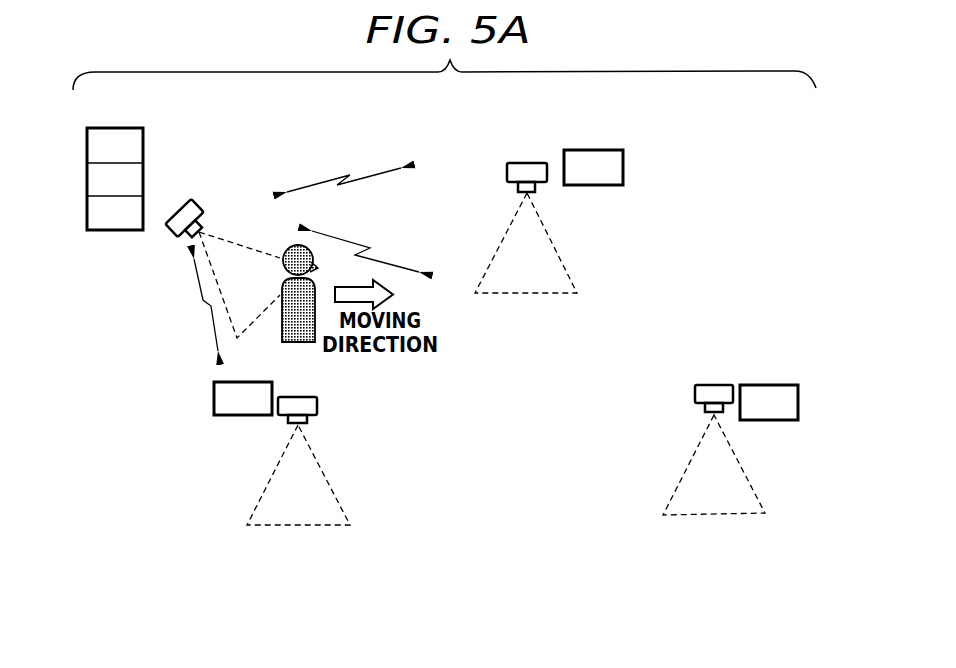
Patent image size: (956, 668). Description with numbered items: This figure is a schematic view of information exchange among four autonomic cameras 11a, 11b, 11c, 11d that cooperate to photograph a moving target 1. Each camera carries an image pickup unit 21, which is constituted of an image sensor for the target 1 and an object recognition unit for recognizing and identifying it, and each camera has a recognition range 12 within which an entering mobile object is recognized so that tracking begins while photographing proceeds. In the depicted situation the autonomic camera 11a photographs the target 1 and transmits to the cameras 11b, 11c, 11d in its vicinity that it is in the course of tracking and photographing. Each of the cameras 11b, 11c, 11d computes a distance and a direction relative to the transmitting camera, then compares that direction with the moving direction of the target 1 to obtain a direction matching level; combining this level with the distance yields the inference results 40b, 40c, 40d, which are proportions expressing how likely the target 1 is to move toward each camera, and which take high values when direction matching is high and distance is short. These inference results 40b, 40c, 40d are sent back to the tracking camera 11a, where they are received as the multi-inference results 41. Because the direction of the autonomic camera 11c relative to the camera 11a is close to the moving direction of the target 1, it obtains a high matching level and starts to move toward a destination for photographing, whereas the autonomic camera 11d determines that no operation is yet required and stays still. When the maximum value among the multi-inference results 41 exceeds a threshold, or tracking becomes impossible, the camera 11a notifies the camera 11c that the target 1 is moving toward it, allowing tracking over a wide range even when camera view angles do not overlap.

The target 1 is at (283, 256).
The autonomic camera 11a is at (195, 204).
The autonomic camera 11b is at (317, 405).
The autonomic camera 11c is at (545, 165).
The autonomic camera 11d is at (720, 385).
The recognition range 12 is at (561, 255).
The image pickup unit 21 is at (537, 189).
The inference result 40b is at (213, 393).
The inference result 40c is at (598, 150).
The inference result 40d is at (773, 385).
The multi-inference results 41 is at (145, 150).